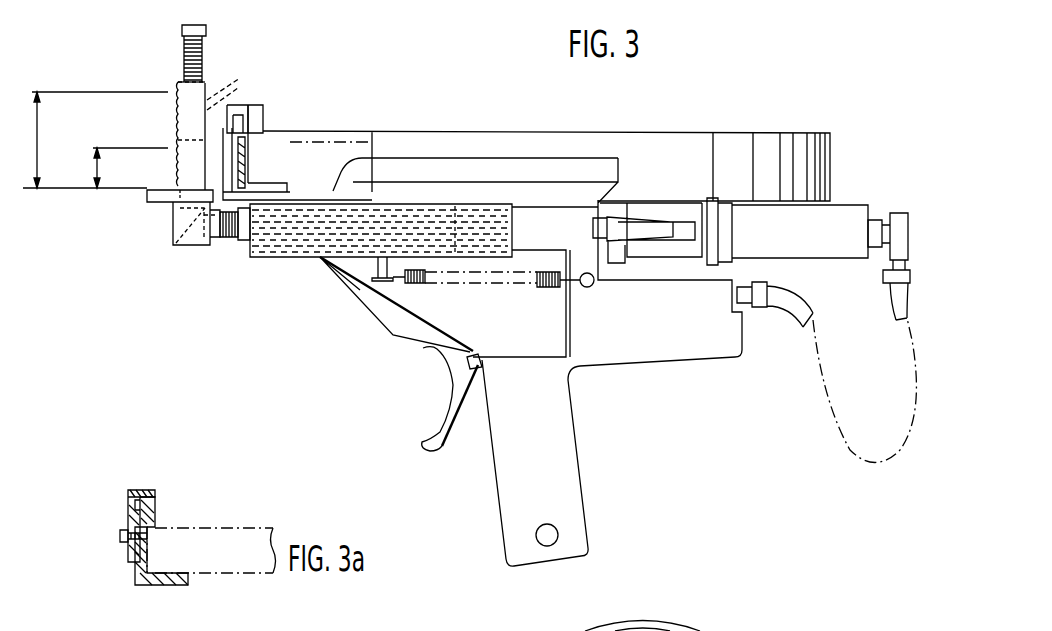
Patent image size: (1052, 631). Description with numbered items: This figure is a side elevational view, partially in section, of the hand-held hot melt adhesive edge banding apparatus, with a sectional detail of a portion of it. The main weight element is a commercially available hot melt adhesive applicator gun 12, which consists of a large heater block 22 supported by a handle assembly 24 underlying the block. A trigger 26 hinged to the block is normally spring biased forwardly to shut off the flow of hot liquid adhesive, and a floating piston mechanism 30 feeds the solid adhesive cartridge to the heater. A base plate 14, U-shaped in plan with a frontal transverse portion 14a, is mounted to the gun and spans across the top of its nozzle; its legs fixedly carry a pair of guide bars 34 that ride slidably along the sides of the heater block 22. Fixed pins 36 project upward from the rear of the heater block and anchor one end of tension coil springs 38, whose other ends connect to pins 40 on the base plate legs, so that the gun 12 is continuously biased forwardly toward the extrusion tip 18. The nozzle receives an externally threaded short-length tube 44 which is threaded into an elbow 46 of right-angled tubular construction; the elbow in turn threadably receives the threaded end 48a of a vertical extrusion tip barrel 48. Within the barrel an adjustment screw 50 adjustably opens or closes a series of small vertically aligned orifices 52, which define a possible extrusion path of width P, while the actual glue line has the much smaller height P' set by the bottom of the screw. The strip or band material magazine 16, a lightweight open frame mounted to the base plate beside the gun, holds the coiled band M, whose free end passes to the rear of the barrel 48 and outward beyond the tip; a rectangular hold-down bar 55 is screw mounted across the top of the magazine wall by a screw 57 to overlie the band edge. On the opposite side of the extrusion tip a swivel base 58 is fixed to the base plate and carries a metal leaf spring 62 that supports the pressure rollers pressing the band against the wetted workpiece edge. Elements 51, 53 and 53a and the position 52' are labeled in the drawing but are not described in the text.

In FIG. 3, the hot melt adhesive applicator gun 12 is at (665, 366).
In FIG. 3, the base plate 14 is at (315, 187).
In FIG. 3A, the frontal transverse portion 14a is at (157, 585).
In FIG. 3, the strip or band material magazine 16 is at (486, 132).
In FIG. 3, the extrusion tip 18 is at (188, 140).
In FIG. 3, the heater block 22 is at (420, 308).
In FIG. 3, the handle assembly 24 is at (553, 450).
In FIG. 3, the trigger 26 is at (428, 440).
In FIG. 3, the floating piston mechanism 30 is at (833, 216).
In FIG. 3, the guide bars 34 is at (297, 251).
In FIG. 3, the fixed pins 36 is at (591, 288).
In FIG. 3, the tension coil springs 38 is at (557, 289).
In FIG. 3, the pins 40 is at (370, 289).
In FIG. 3, the externally threaded short-length tube 44 is at (227, 242).
In FIG. 3, the elbow 46 is at (186, 233).
In FIG. 3, the vertical extrusion tip barrel 48 is at (192, 90).
In FIG. 3, the threaded end 48a is at (191, 186).
In FIG. 3, the adjustment screw 50 is at (200, 43).
In FIG. 3, the flange 51 is at (147, 197).
In FIG. 3, the orifices 52 is at (148, 134).
In FIG. 3, the thread position 52' is at (236, 88).
In FIG. 3, the bracket block 53 is at (254, 116).
In FIG. 3A, the bracket block 53 is at (127, 500).
In FIG. 3A, the bracket block portion 53a is at (156, 510).
In FIG. 3, the rectangular bar hold down 55 is at (244, 170).
In FIG. 3A, the screw 57 is at (120, 536).
In FIG. 3, the swivel base 58 is at (247, 245).
In FIG. 3, the leaf spring 62 is at (251, 148).
In FIG. 3, the band or strip M is at (357, 142).
In FIG. 3A, the band or strip M is at (226, 532).
In FIG. 3, the extrusion path width P is at (95, 140).
In FIG. 3, the glue line width P' is at (103, 168).